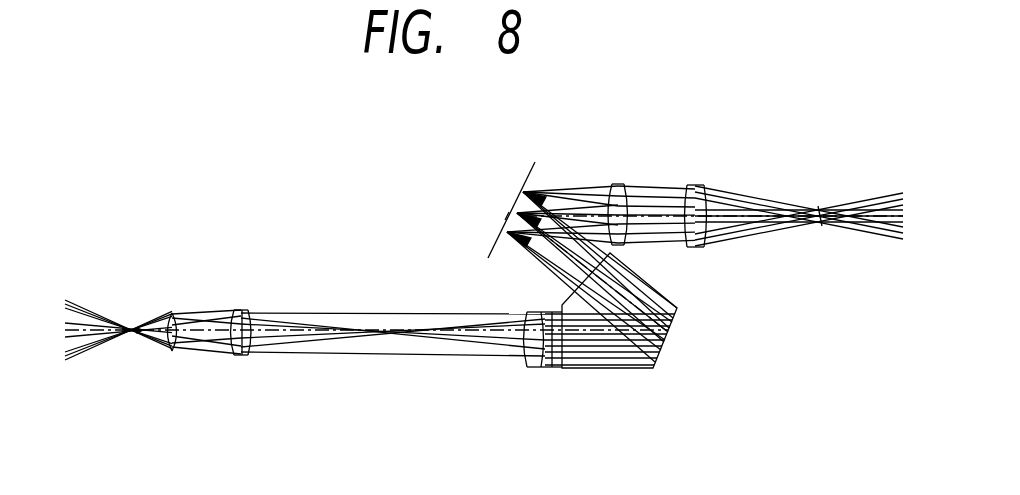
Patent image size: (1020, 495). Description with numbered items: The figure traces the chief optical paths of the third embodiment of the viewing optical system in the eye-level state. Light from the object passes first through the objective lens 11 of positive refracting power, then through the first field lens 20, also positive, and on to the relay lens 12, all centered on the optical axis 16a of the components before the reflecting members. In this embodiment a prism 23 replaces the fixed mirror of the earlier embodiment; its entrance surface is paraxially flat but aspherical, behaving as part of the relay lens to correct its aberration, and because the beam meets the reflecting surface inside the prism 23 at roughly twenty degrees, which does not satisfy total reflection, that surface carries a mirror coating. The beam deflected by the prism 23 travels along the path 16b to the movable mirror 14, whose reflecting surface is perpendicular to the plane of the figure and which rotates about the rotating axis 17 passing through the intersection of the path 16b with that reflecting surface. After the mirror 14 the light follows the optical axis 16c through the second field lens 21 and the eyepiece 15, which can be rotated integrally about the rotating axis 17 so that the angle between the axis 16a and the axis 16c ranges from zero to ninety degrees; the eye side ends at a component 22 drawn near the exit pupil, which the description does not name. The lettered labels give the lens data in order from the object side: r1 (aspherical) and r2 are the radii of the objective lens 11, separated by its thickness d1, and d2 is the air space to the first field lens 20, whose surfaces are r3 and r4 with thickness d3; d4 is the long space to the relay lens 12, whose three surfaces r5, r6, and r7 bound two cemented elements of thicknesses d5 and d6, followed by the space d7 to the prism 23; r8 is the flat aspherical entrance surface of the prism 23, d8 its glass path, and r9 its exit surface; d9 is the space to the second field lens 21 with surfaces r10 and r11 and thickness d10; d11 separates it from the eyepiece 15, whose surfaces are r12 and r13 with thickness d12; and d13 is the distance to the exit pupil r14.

The objective lens 11 is at (169, 296).
The first field lens 20 is at (246, 298).
The relay lens 12 is at (478, 339).
The prism 23 is at (655, 367).
The movable mirror 14 is at (530, 168).
The rotating axis 17 is at (508, 217).
The second field lens 21 is at (615, 182).
The eyepiece 15 is at (701, 183).
The eye point 22 is at (838, 172).
The optical axis of components before the mirrors 16a is at (330, 345).
The optical axis deflected by the first reflecting member 16b is at (620, 254).
The optical axis of components after the mirrors 16c is at (723, 212).
The radius of curvature of first lens surface r1 is at (170, 313).
The radius of curvature of second lens surface r2 is at (172, 270).
The radius of curvature of third lens surface r3 is at (234, 312).
The radius of curvature of fourth lens surface r4 is at (246, 270).
The radius of curvature of fifth lens surface r5 is at (524, 323).
The radius of curvature of sixth lens surface r6 is at (540, 320).
The radius of curvature of seventh lens surface r7 is at (549, 320).
The radius of curvature of eighth lens surface r8 is at (556, 318).
The radius of curvature of ninth lens surface r9 is at (554, 317).
The radius of curvature of tenth lens surface r10 is at (610, 188).
The radius of curvature of eleventh lens surface r11 is at (614, 148).
The radius of curvature of twelfth lens surface r12 is at (688, 189).
The radius of curvature of thirteenth lens surface r13 is at (694, 148).
The exit pupil surface r14 is at (820, 208).
The space between first and second lens surfaces d1 is at (176, 351).
The space between second and third lens surfaces d2 is at (202, 340).
The space between third and fourth lens surfaces d3 is at (243, 356).
The space between fourth and fifth lens surfaces d4 is at (415, 343).
The space between fifth and sixth lens surfaces d5 is at (514, 357).
The space between sixth and seventh lens surfaces d6 is at (560, 353).
The space between seventh and eighth lens surfaces d7 is at (572, 352).
The space between eighth and ninth lens surfaces d8 is at (603, 340).
The space between ninth and tenth lens surfaces d9 is at (628, 242).
The space between tenth and eleventh lens surfaces d10 is at (648, 240).
The space between eleventh and twelfth lens surfaces d11 is at (705, 240).
The space between twelfth and thirteenth lens surfaces d12 is at (753, 240).
The space between thirteenth and fourteenth lens surfaces d13 is at (788, 240).